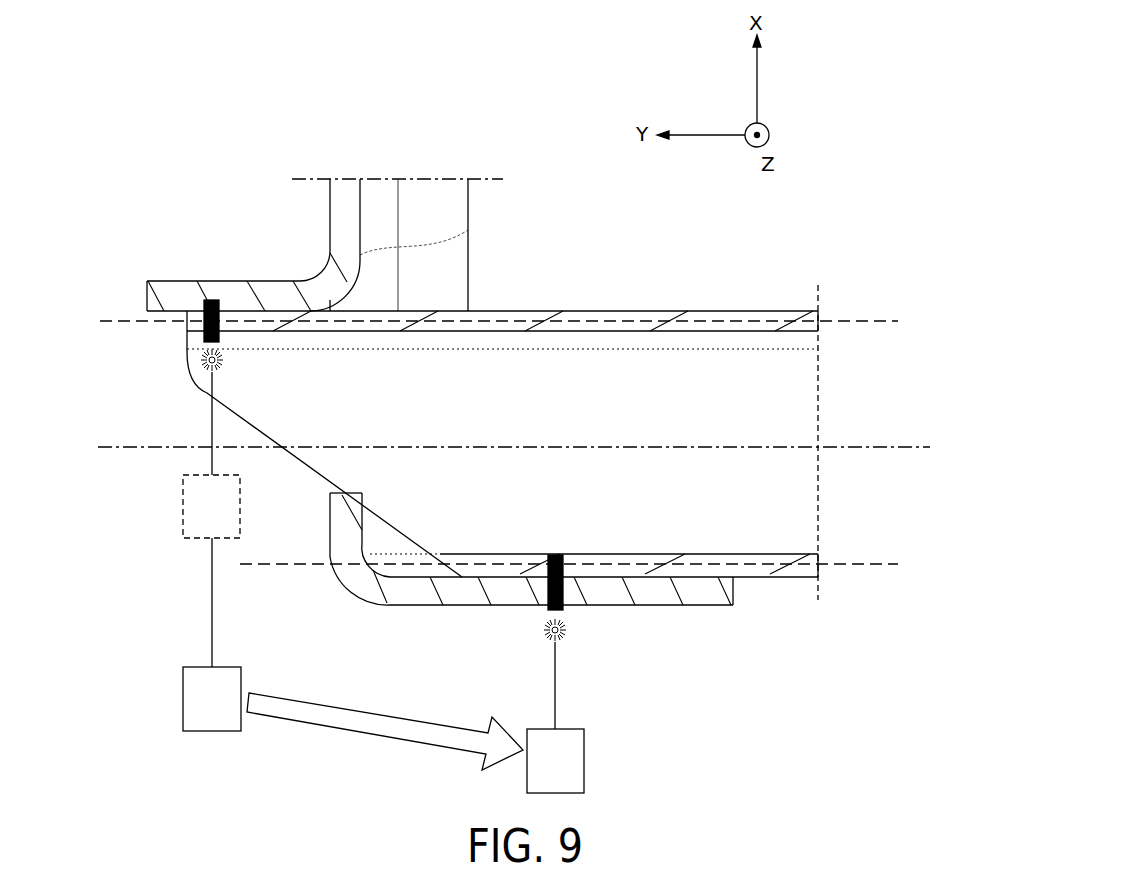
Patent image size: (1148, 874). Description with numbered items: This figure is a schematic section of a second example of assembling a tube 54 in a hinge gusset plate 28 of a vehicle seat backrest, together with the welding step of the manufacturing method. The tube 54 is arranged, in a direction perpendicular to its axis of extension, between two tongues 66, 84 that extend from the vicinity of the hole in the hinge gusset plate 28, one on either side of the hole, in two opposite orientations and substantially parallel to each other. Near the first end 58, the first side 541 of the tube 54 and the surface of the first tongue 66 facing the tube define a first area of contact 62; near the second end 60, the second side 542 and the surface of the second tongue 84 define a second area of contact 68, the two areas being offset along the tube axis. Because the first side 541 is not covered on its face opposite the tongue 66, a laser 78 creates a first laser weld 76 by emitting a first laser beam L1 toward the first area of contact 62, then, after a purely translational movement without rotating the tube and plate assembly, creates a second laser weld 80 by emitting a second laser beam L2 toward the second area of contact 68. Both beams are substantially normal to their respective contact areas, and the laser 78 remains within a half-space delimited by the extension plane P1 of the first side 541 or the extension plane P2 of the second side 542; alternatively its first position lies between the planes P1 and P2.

The hinge gusset plate 28 is at (358, 205).
The tube 54 is at (825, 424).
The first side of the tube 541 is at (597, 320).
The second side of the tube 542 is at (757, 570).
The first end 58 is at (176, 326).
The second end 60 is at (441, 570).
The first area of contact 62 is at (265, 290).
The first tongue 66 is at (163, 297).
The second area of contact 68 is at (635, 590).
The first laser weld 76 is at (208, 300).
The laser 78 is at (182, 507).
The second laser weld 80 is at (548, 605).
The second tongue 84 is at (483, 605).
The extension plane of the first side P1 is at (880, 318).
The extension plane of the second side P2 is at (881, 555).
The first laser beam L1 is at (212, 413).
The second laser beam L2 is at (556, 672).